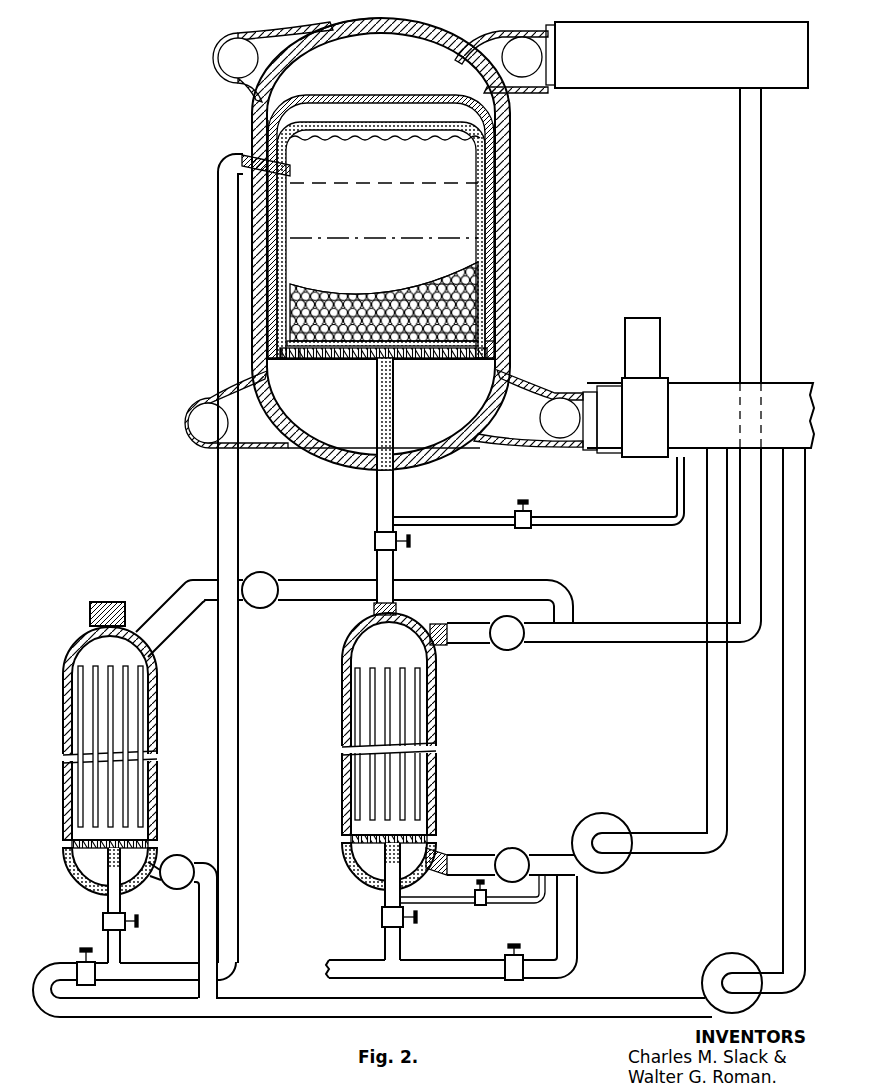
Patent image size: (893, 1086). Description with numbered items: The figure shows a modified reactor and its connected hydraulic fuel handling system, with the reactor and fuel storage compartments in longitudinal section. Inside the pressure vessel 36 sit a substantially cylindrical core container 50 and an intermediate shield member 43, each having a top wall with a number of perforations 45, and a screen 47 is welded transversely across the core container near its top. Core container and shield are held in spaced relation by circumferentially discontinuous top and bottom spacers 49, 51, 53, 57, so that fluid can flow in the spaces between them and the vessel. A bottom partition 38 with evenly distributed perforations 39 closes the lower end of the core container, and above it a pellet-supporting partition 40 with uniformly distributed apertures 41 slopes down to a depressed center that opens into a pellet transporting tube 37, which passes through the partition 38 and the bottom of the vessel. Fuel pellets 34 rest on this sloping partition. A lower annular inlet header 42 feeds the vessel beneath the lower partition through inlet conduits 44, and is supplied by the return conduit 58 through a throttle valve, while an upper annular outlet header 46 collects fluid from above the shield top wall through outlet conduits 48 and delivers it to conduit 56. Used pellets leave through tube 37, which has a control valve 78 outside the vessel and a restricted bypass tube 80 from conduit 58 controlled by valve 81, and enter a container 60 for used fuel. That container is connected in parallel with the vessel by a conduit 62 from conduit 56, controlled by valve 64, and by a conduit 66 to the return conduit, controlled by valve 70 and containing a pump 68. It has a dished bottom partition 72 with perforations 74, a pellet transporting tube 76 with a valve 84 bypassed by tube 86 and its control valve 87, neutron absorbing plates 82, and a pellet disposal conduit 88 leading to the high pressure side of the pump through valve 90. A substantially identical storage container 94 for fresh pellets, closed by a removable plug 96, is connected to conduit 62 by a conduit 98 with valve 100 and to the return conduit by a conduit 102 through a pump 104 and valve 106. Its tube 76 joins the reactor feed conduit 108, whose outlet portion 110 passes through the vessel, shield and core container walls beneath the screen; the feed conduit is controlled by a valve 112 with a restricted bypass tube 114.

The fuel pellet 34 is at (400, 290).
The pressure vessel 36 is at (497, 230).
The pellet transporting tube 37 is at (386, 400).
The bottom partition 38 is at (465, 360).
The perforations 39 is at (340, 359).
The pellet-supporting partition 40 is at (488, 341).
The apertures 41 is at (302, 360).
The lower annular inlet header 42 is at (287, 443).
The intermediate shield member 43 is at (490, 186).
The inlet conduits 44 is at (246, 400).
The perforations 45 is at (366, 95).
The upper annular outlet header 46 is at (302, 43).
The screen 47 is at (357, 141).
The outlet conduits 48 is at (268, 52).
The spacer 49 is at (265, 136).
The core container 50 is at (496, 249).
The spacer 51 is at (497, 352).
The spacer 53 is at (252, 148).
The conduit 56 is at (660, 30).
The spacer 57 is at (264, 358).
The return conduit 58 is at (707, 392).
The container for used fuel pellets 60 is at (432, 770).
The conduit 62 is at (622, 642).
The valve 64 is at (512, 650).
The conduit 66 is at (708, 733).
The pump 68 is at (618, 858).
The valve 70 is at (520, 842).
The bottom partition 72 is at (150, 840).
The perforations 74 is at (66, 860).
The pellet transporting tube 76 is at (104, 884).
The control valve 78 is at (374, 540).
The bypass tube 80 is at (596, 519).
The valve 81 is at (518, 528).
The plates 82 is at (128, 790).
The valve 84 is at (120, 928).
The bypass tube 86 is at (462, 898).
The control valve 87 is at (486, 904).
The pellet disposal conduit 88 is at (568, 927).
The valve 90 is at (508, 956).
The storage container 94 is at (152, 730).
The removable plug 96 is at (108, 602).
The conduit 98 is at (199, 582).
The valve 100 is at (270, 563).
The conduit 102 is at (300, 1004).
The pump 104 is at (730, 956).
The valve 106 is at (185, 855).
The reactor feed conduit 108 is at (240, 712).
The outlet portion 110 is at (288, 164).
The valve 112 is at (78, 962).
The restricted bypass tube 114 is at (98, 995).